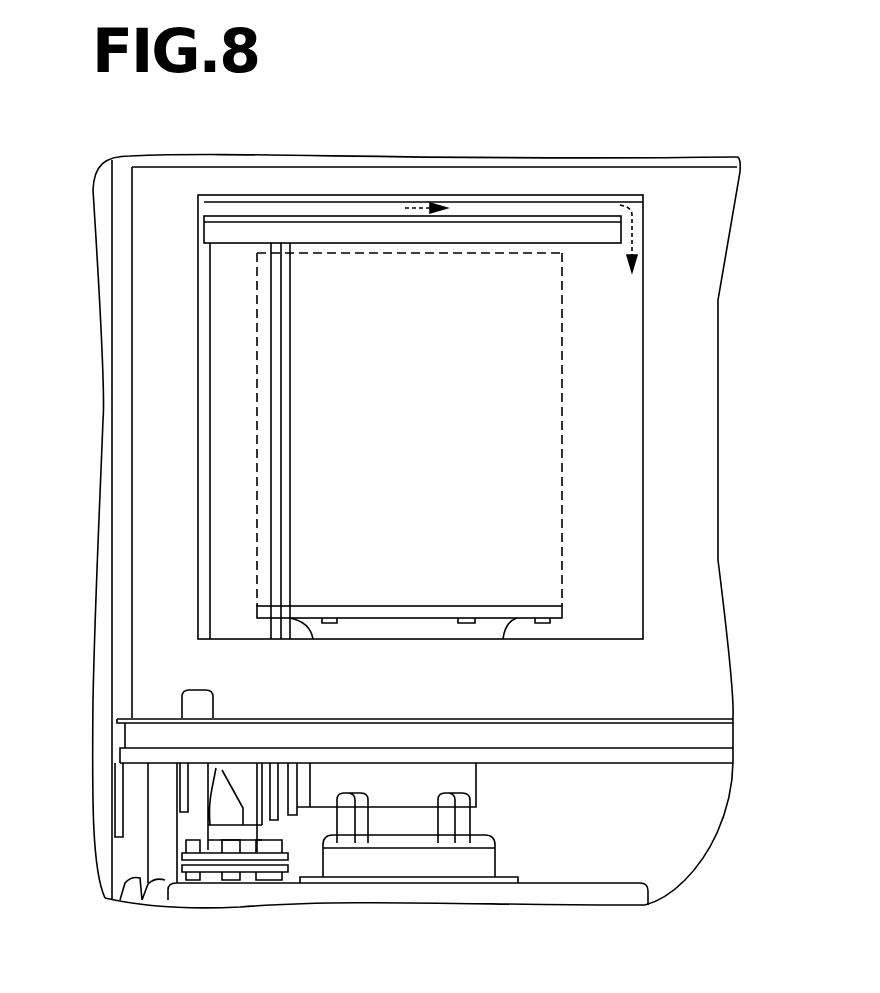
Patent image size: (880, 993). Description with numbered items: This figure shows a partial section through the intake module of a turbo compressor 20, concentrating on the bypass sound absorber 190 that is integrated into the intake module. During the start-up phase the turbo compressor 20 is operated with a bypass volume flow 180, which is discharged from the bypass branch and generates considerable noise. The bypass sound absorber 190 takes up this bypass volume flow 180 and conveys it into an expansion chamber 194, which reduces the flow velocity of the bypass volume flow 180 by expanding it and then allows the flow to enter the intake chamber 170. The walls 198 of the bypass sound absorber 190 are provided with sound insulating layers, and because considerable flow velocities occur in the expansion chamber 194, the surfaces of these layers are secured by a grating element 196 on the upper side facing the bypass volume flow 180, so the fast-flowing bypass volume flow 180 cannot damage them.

The turbo compressor 20 is at (540, 848).
The intake chamber 170 is at (615, 543).
The bypass volume flow 180 is at (418, 208).
The bypass sound absorber 190 is at (250, 163).
The expansion chamber 194 is at (323, 210).
The grating element 196 is at (557, 197).
The walls 198 is at (497, 182).